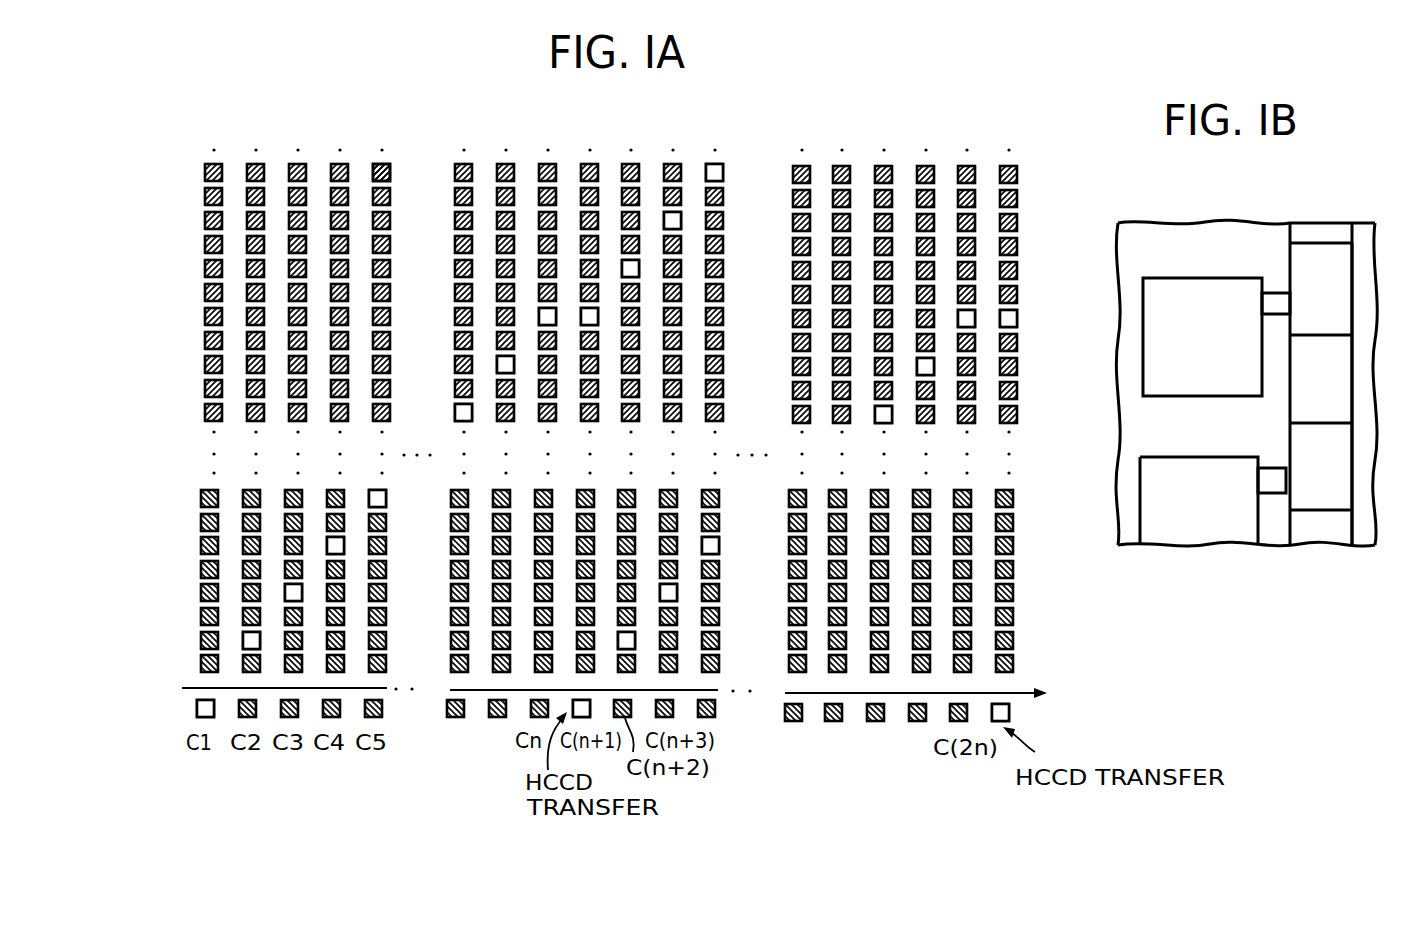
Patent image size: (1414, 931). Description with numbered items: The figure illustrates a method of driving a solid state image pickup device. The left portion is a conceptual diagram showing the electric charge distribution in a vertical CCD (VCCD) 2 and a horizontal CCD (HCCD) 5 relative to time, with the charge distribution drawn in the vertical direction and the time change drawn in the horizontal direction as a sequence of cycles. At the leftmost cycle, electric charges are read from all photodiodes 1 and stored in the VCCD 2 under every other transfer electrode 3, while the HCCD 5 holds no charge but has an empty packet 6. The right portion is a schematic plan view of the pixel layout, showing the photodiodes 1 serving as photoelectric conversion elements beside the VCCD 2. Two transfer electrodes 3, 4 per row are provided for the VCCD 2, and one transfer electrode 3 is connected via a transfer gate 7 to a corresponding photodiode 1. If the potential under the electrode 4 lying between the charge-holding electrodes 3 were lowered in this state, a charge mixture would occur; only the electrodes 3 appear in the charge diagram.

In FIG. 1B, the photodiode 1 is at (1190, 295).
In FIG. 1A, the vertical CCD (VCCD) 2 is at (197, 382).
In FIG. 1B, the vertical CCD (VCCD) 2 is at (1358, 518).
In FIG. 1A, the transfer electrode 3 is at (385, 174).
In FIG. 1B, the transfer electrode 3 is at (1322, 258).
In FIG. 1B, the transfer electrode 4 is at (1342, 398).
In FIG. 1A, the horizontal CCD (HCCD) 5 is at (196, 701).
In FIG. 1A, the empty packet 6 is at (550, 317).
In FIG. 1B, the transfer gate 7 is at (1272, 302).